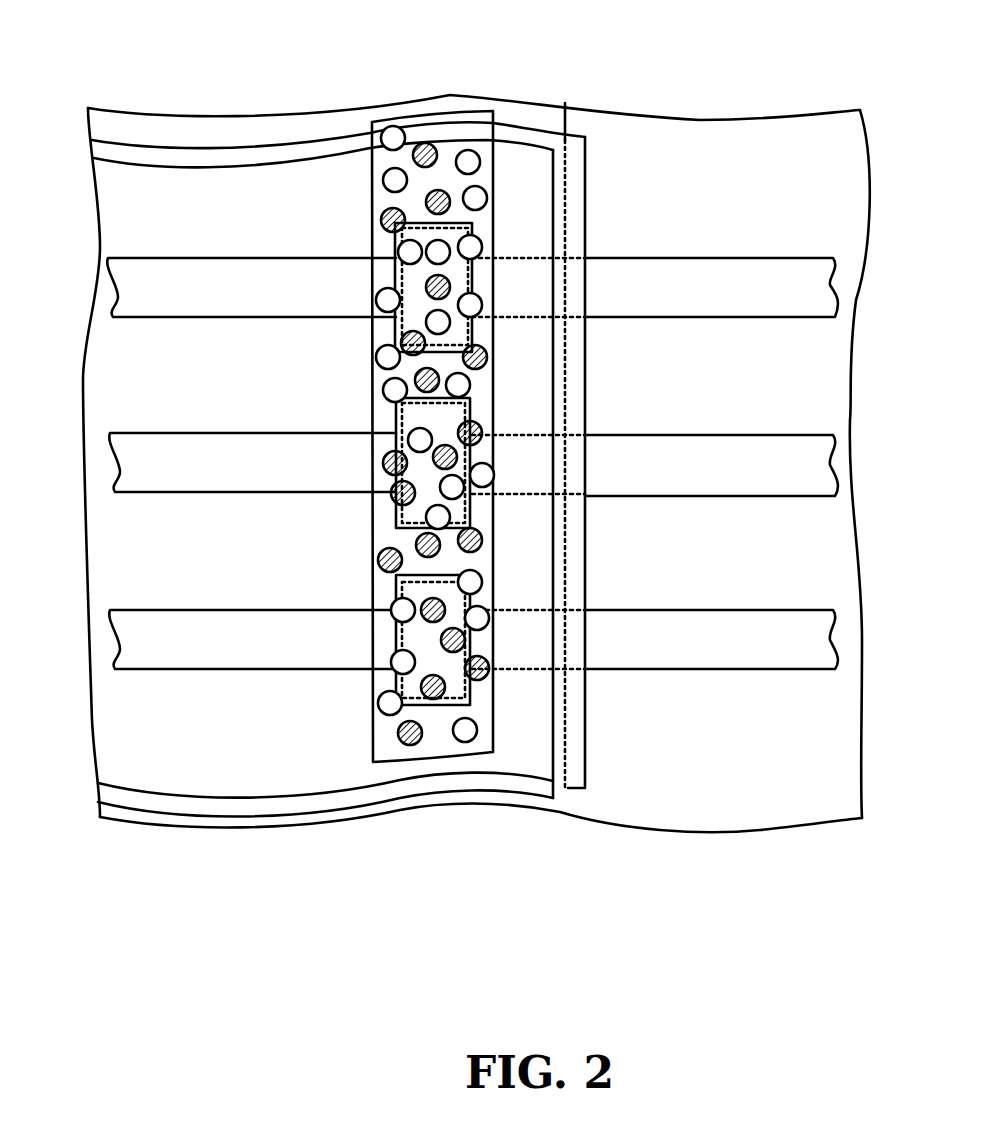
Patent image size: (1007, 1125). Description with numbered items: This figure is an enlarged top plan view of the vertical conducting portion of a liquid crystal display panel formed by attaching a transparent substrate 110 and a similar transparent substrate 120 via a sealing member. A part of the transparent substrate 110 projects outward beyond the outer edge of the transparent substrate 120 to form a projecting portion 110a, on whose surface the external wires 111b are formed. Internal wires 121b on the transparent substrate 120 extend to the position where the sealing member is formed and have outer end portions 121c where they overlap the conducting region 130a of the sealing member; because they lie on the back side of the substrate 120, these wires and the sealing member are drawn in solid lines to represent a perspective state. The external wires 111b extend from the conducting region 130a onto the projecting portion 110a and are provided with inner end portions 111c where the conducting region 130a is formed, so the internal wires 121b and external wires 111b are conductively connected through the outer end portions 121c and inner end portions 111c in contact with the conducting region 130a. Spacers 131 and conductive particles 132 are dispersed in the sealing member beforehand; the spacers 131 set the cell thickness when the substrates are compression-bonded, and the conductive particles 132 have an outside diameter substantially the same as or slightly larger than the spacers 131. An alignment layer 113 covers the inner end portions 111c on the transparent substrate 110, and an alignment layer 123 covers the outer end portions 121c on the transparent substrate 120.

The transparent substrate 110 is at (225, 115).
The projecting portion 110a is at (733, 143).
The external wires 111b is at (682, 477).
The inner end portions 111c is at (400, 642).
The alignment layer 113 is at (568, 715).
The transparent substrate 120 is at (140, 142).
The internal wires 121b is at (207, 450).
The outer end portions 121c is at (472, 276).
The alignment layer 123 is at (470, 797).
The conducting region 130a is at (497, 407).
The spacers 131 is at (386, 365).
The conductive particles 132 is at (383, 467).